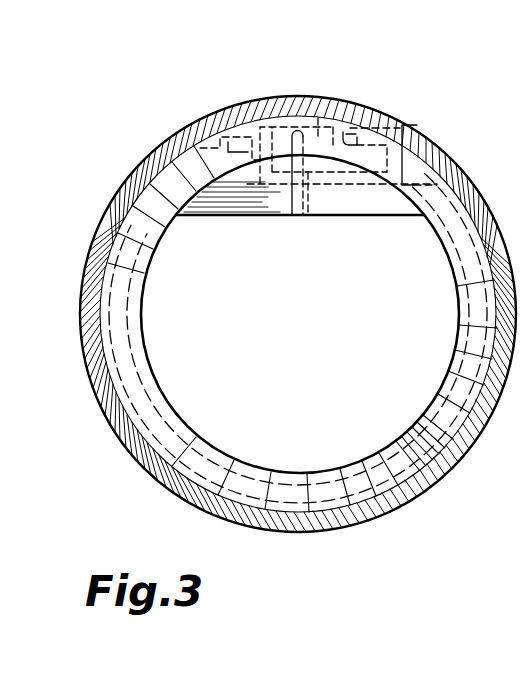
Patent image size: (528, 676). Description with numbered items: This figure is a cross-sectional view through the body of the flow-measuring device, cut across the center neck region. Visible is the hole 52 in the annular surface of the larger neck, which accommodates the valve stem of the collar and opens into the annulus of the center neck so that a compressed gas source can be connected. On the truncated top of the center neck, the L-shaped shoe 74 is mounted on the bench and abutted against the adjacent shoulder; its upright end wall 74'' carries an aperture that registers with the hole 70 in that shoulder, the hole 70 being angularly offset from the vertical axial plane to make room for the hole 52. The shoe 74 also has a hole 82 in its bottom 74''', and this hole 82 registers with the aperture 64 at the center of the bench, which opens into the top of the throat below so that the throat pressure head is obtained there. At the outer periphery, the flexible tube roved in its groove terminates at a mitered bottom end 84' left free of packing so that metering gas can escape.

The hole 52 is at (231, 162).
The L-shaped shoe 74 is at (342, 112).
The upright end wall 74'' is at (325, 92).
The hole 70 is at (356, 116).
The aperture 64 is at (286, 196).
The hole 82 is at (317, 172).
The bottom 74''' is at (382, 198).
The bottom end 84' is at (457, 469).